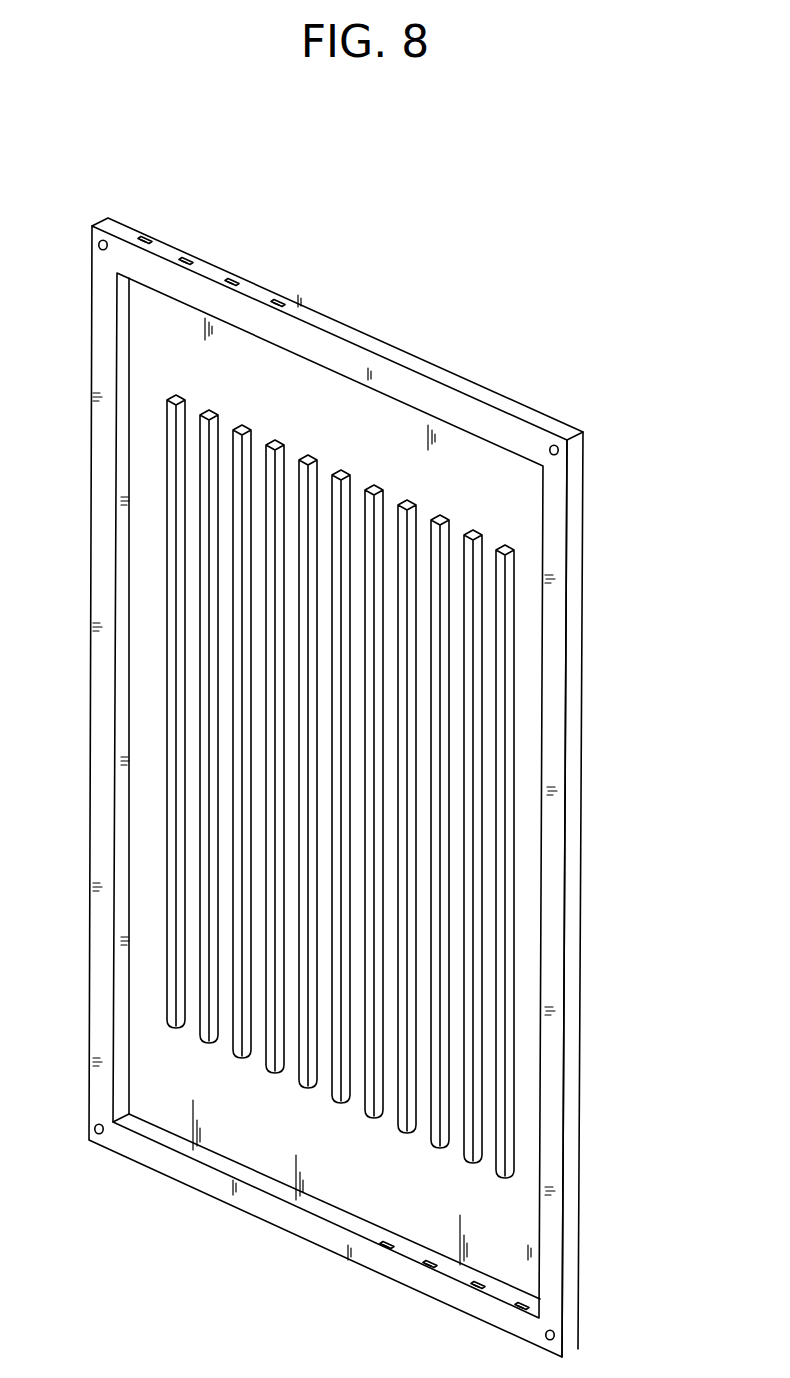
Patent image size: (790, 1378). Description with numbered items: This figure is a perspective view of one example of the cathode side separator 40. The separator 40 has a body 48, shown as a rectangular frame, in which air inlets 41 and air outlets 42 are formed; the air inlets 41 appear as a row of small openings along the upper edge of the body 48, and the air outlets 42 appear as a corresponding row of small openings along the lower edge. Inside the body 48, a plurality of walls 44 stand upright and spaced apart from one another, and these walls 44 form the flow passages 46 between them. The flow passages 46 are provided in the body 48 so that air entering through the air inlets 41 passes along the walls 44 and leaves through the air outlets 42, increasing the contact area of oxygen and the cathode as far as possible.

The separator 40 is at (397, 338).
The air inlets 41 is at (184, 257).
The air outlets 42 is at (387, 1247).
The walls 44 is at (420, 786).
The flow passages 46 is at (475, 850).
The body 48 is at (573, 1070).